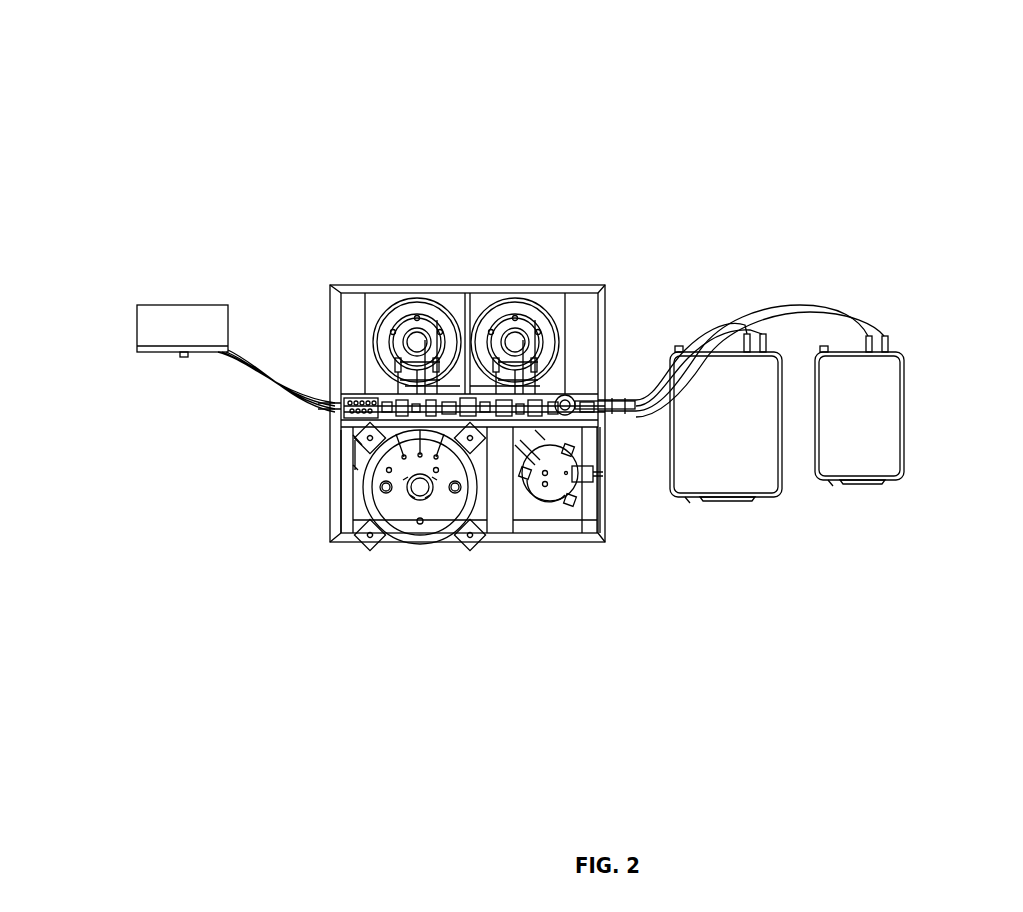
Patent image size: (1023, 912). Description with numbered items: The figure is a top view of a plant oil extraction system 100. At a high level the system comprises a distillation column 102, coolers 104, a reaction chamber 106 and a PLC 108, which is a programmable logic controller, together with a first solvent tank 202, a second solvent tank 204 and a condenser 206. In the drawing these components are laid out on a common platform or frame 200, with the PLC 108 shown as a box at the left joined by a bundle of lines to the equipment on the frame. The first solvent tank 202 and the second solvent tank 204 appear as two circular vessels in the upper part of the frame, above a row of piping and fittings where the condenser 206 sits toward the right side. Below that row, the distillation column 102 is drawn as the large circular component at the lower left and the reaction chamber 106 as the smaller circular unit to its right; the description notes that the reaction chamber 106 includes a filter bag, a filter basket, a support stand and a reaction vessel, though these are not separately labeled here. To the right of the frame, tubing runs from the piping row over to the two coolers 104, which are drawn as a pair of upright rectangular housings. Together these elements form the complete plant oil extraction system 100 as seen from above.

The plant oil extraction system 100 is at (943, 60).
The distillation column 102 is at (409, 546).
The coolers 104 is at (760, 366).
The reaction chamber 106 is at (558, 490).
The PLC 108 is at (176, 298).
The frame 200 is at (467, 413).
The first solvent tank 202 is at (438, 308).
The second solvent tank 204 is at (528, 305).
The condenser 206 is at (572, 393).